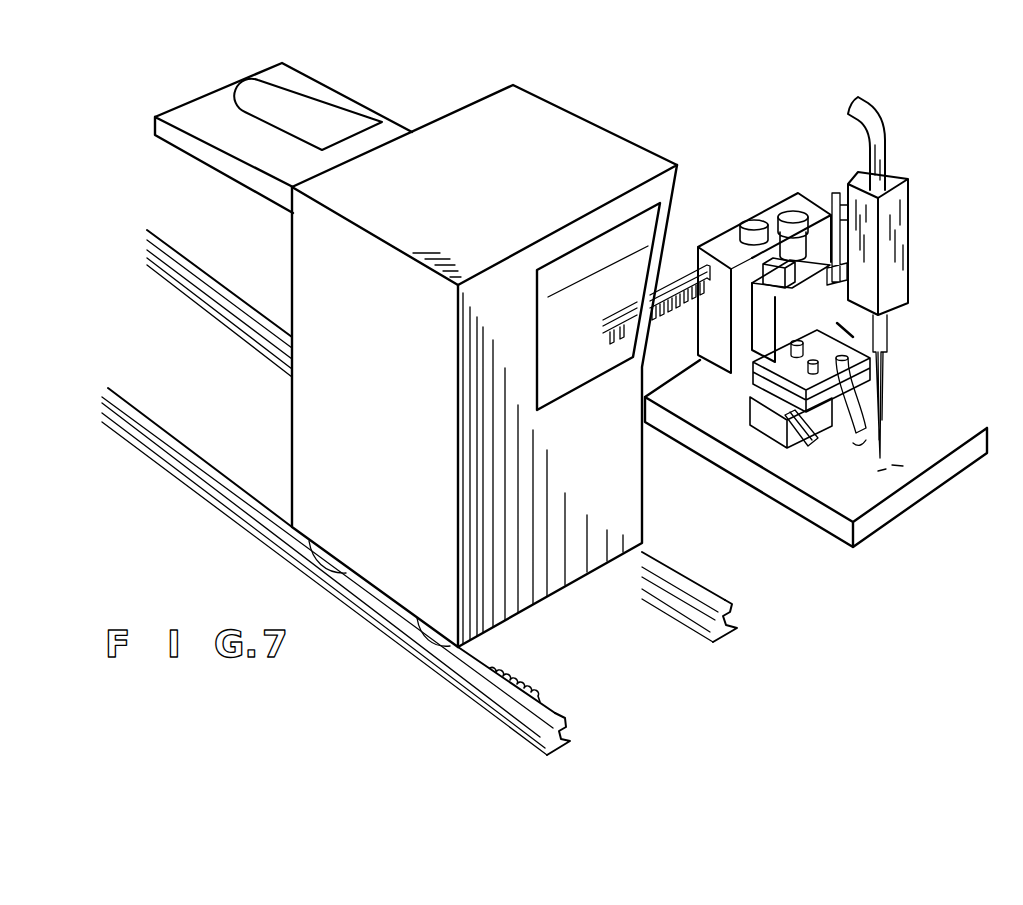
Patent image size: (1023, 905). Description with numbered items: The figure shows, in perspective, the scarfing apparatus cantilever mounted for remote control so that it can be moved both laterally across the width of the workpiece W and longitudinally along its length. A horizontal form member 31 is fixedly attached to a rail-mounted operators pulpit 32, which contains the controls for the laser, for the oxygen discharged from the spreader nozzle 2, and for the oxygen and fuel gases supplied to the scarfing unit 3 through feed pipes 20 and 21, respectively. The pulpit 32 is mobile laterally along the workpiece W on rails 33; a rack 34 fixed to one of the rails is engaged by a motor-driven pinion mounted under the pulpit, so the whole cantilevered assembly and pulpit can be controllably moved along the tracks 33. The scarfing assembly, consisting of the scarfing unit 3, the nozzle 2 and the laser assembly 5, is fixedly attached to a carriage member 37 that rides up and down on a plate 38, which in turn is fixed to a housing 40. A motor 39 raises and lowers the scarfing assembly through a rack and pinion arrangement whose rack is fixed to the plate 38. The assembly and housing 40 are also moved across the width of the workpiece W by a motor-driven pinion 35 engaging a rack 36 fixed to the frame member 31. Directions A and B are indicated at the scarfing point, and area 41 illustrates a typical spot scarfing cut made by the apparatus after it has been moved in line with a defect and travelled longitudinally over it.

The spreader nozzle 2 is at (858, 428).
The scarfing unit 3 is at (750, 403).
The laser assembly 5 is at (902, 196).
The feed pipe 20 is at (813, 360).
The feed pipe 21 is at (788, 388).
The horizontal form member 31 is at (825, 198).
The operators pulpit 32 is at (642, 155).
The rails 33 is at (673, 571).
The rack 34 is at (512, 684).
The motor driven pinion 35 is at (750, 222).
The rack 36 is at (670, 313).
The carriage member 37 is at (750, 357).
The plate 38 is at (780, 278).
The motor 39 is at (792, 242).
The housing 40 is at (788, 202).
The area 41 is at (326, 110).
The direction A is at (870, 475).
The direction B is at (863, 465).
The workpiece W is at (972, 426).